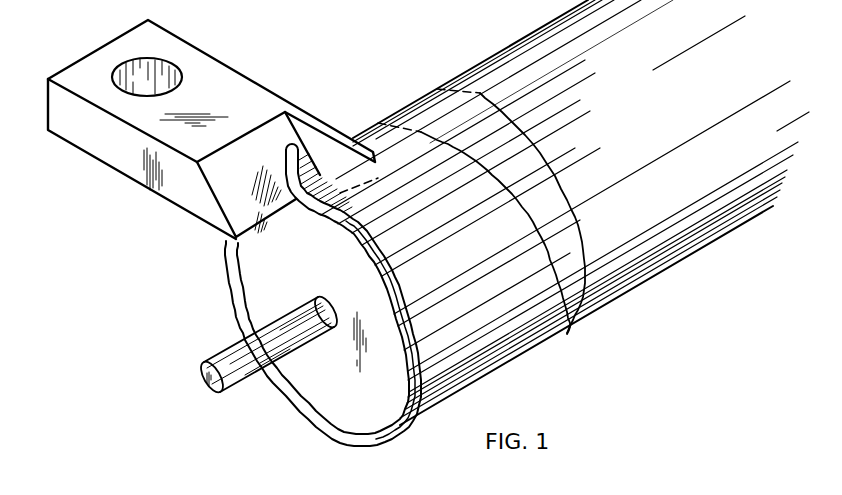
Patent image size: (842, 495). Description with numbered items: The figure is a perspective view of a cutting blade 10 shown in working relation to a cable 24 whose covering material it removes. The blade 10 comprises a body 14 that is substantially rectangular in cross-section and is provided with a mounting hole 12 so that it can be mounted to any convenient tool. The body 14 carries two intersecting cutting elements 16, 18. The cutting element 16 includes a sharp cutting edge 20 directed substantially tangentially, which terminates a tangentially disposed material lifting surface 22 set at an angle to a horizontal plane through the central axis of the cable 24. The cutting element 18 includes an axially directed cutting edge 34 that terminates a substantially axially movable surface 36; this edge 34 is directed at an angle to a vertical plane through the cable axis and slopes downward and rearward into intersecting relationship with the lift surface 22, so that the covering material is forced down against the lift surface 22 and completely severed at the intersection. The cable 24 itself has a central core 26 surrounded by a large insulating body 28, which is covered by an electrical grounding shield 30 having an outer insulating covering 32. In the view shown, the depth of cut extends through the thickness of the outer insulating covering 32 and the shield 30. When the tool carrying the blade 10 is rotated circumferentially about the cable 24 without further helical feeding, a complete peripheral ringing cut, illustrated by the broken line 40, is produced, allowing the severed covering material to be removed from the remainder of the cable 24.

The cutting blade 10 is at (221, 86).
The mounting hole 12 is at (156, 63).
The body 14 is at (122, 158).
The cutting element 16 is at (263, 241).
The cutting element 18 is at (364, 177).
The cutting edge 20 is at (287, 218).
The material lifting surface 22 is at (235, 241).
The cable 24 is at (505, 48).
The central core 26 is at (234, 378).
The insulating body 28 is at (343, 410).
The electrical grounding shield 30 is at (388, 428).
The outer insulating covering 32 is at (400, 434).
The cutting edge 34 is at (377, 162).
The axially movable surface 36 is at (355, 138).
The peripheral ringing cut 40 is at (557, 170).